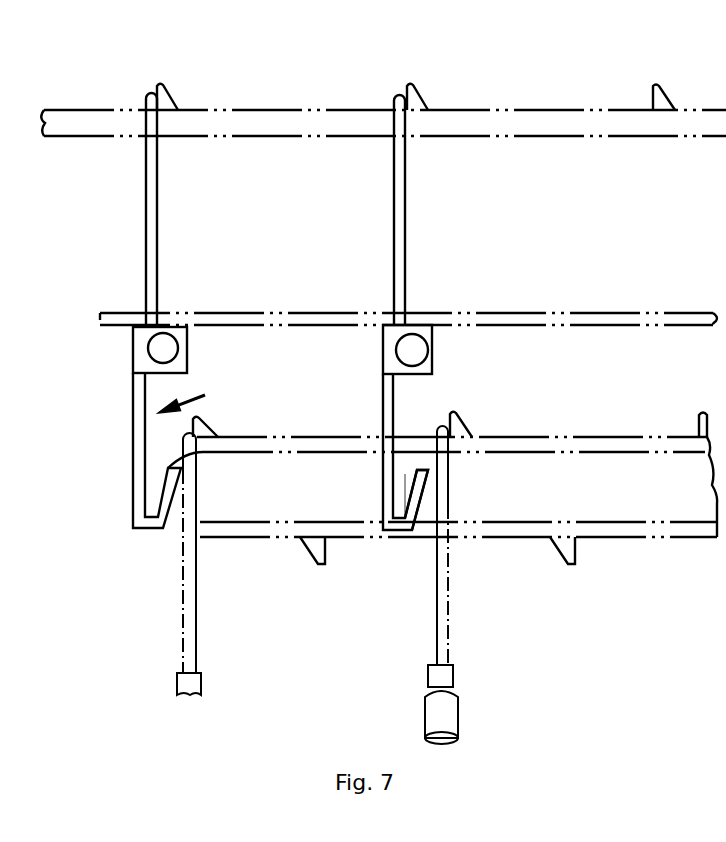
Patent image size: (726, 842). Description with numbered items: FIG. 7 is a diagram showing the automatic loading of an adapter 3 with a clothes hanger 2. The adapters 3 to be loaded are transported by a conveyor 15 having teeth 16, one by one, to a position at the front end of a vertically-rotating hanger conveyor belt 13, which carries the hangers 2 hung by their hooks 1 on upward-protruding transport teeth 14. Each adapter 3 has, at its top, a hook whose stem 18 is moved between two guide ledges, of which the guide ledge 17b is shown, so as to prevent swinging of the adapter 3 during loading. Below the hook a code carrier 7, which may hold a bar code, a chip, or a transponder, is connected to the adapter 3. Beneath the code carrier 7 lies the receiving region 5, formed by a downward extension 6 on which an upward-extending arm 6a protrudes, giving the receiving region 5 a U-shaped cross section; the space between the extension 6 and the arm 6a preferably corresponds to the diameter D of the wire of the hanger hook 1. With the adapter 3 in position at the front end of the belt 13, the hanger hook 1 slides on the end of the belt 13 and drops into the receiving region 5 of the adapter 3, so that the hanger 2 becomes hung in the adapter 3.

The hanger hook 1 is at (193, 630).
The clothes hanger 2 is at (445, 723).
The adapter 3 is at (143, 362).
The receiving region 5 is at (125, 470).
The downward extension 6 is at (387, 490).
The upward-extending arm 6a is at (415, 492).
The code carrier 7 is at (413, 351).
The conveyor belt 13 is at (442, 489).
The transport teeth 14 is at (457, 425).
The conveyor 15 is at (503, 118).
The teeth 16 is at (415, 107).
The guide ledge 17b is at (545, 318).
The stem 18 is at (155, 226).
The diameter of the wire D is at (402, 482).